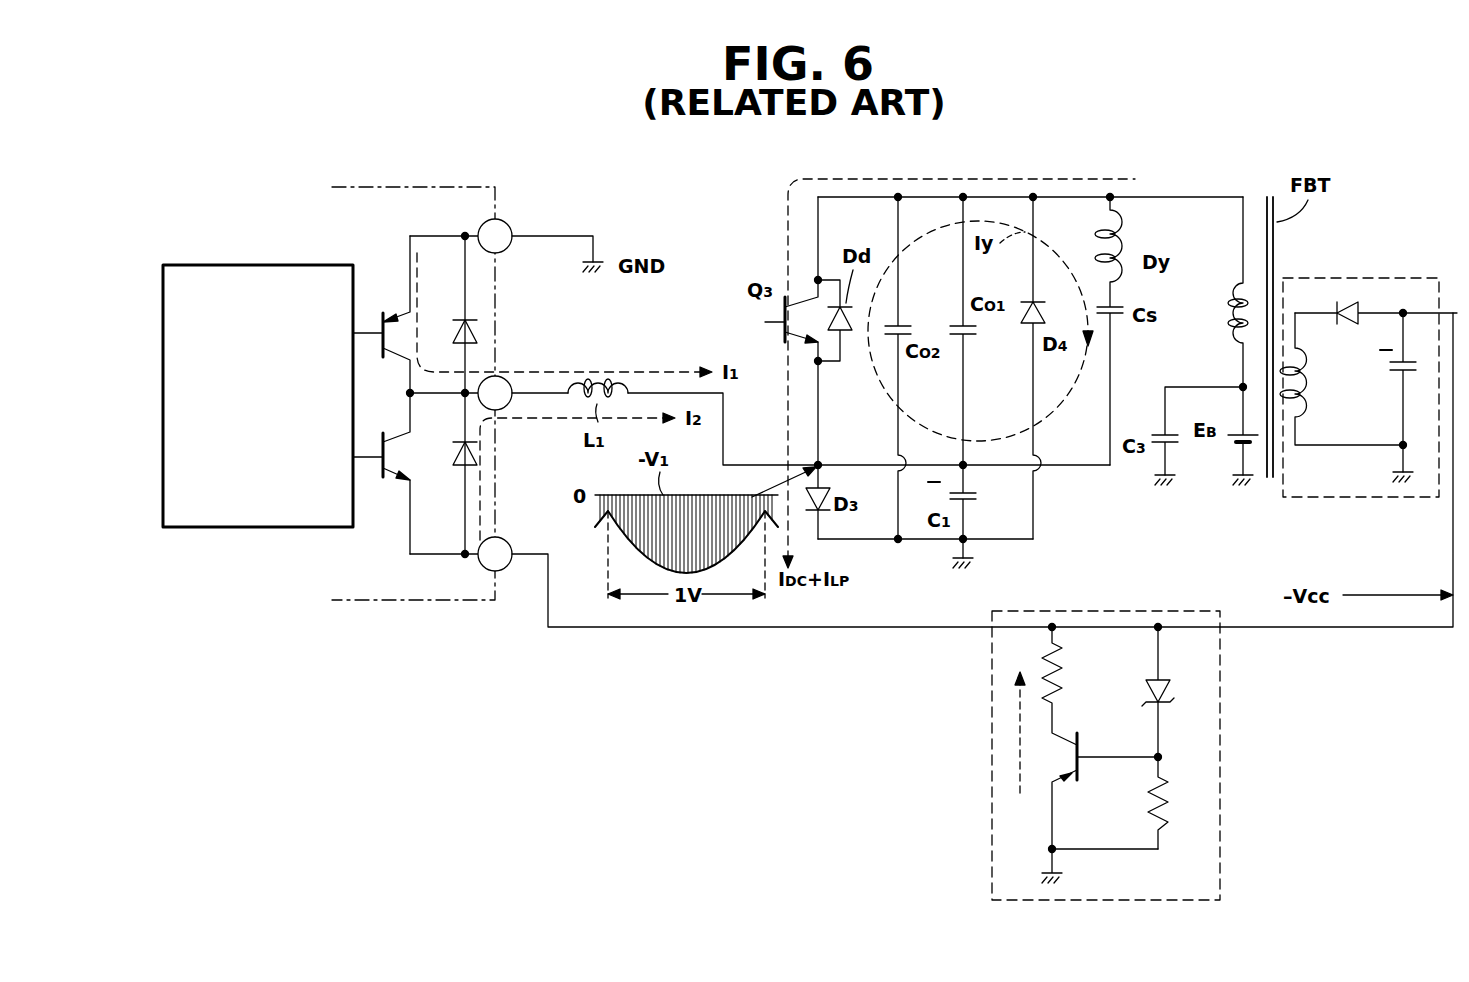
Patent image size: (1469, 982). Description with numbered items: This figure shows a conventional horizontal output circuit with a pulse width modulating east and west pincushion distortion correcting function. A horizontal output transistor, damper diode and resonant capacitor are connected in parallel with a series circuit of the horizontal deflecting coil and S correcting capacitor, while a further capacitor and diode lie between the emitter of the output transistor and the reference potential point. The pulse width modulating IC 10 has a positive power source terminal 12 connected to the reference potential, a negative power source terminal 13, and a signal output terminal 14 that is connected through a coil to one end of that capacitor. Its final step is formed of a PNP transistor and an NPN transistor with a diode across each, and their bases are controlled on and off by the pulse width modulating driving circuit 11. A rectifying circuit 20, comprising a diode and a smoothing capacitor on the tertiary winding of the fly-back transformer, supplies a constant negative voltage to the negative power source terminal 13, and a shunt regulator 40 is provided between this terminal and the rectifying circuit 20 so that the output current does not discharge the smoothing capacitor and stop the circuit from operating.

The pulse width modulating IC 10 is at (440, 170).
The pulse width modulating driving circuit 11 is at (277, 265).
The positive power source terminal 12 is at (508, 223).
The negative power source terminal 13 is at (508, 541).
The signal output terminal 14 is at (505, 378).
The rectifying circuit 20 is at (1385, 278).
The shunt regulator 40 is at (1222, 712).